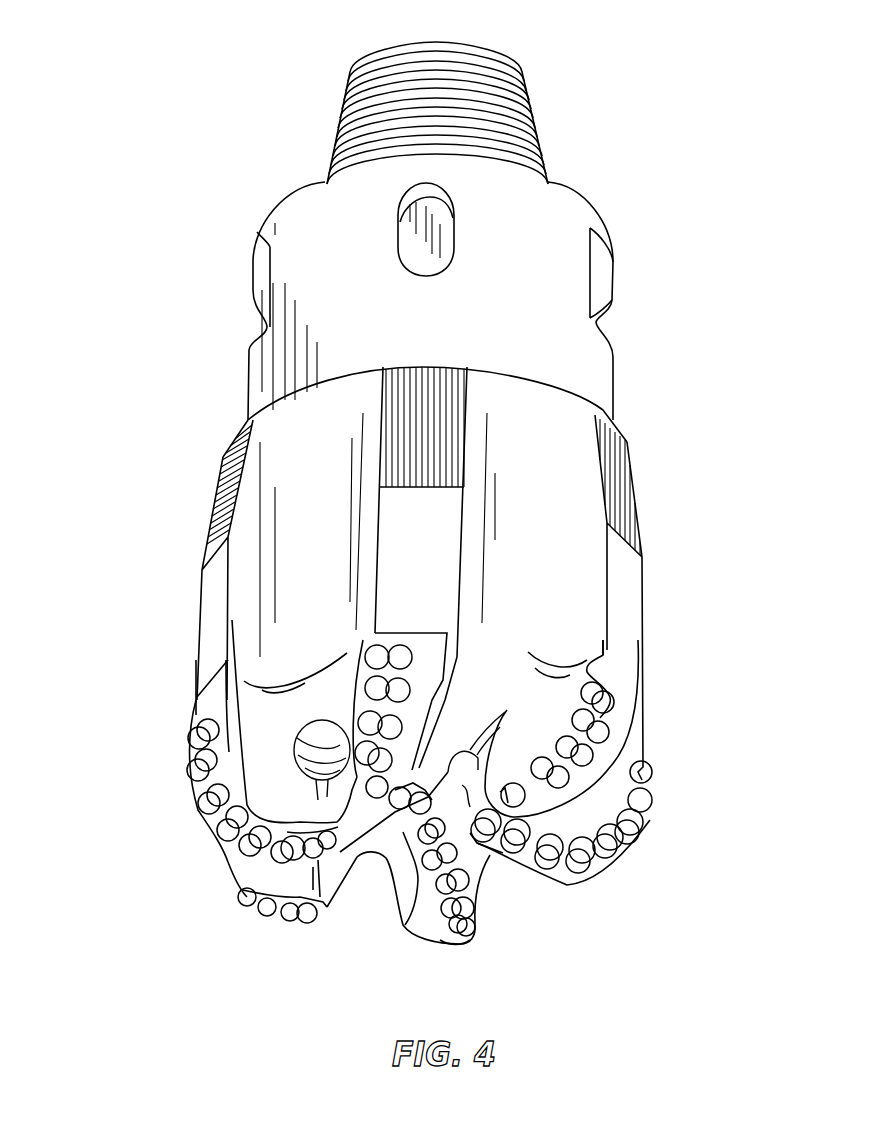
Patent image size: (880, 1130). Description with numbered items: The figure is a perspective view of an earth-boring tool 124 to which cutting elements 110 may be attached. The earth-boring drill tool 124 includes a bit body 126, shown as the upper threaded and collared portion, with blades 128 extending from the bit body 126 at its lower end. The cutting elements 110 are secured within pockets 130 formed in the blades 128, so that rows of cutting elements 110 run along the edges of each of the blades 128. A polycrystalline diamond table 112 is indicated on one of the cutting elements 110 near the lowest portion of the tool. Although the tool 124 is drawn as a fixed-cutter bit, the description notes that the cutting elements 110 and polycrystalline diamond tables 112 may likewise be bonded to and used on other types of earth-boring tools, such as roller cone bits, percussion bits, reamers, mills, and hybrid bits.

The earth-boring tool 124 is at (148, 128).
The bit body 126 is at (287, 498).
The blades 128 is at (237, 887).
The cutting elements 110 is at (217, 795).
The pockets 130 is at (220, 715).
The polycrystalline diamond tables 112 is at (467, 907).